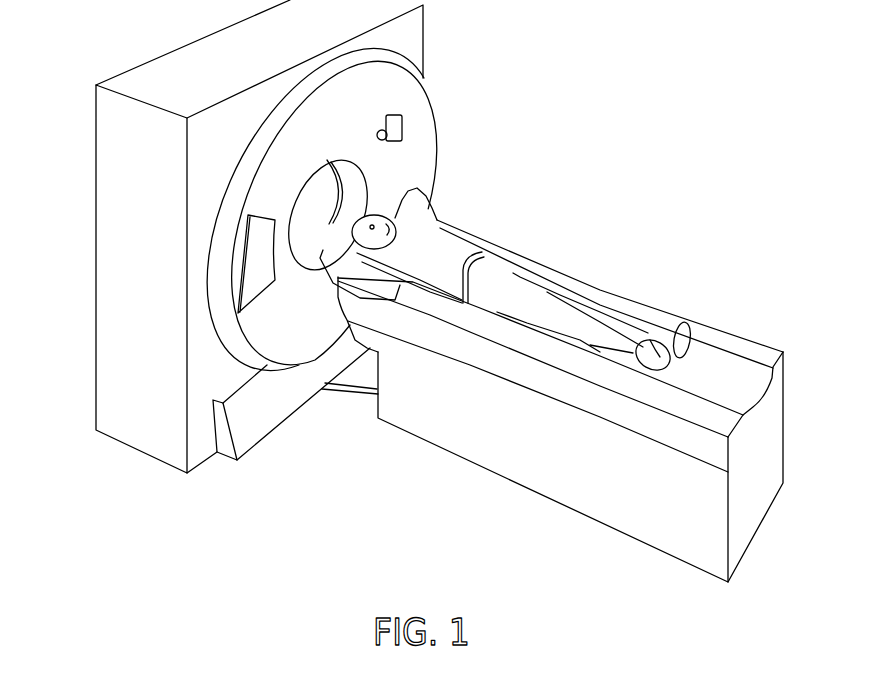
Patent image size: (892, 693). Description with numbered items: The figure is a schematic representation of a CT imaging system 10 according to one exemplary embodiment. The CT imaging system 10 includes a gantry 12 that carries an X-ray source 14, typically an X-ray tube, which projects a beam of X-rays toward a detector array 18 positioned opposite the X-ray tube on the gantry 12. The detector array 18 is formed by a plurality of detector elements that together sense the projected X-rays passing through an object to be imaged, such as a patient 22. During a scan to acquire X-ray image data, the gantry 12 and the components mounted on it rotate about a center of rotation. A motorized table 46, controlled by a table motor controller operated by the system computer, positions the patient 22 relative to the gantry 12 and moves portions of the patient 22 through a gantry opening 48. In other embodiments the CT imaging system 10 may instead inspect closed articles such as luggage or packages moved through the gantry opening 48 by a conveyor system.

The CT imaging system 10 is at (614, 120).
The gantry 12 is at (373, 108).
The X-ray source 14 is at (404, 118).
The detector array 18 is at (274, 282).
The patient 22 is at (538, 277).
The motorized table 46 is at (530, 472).
The gantry opening 48 is at (315, 215).